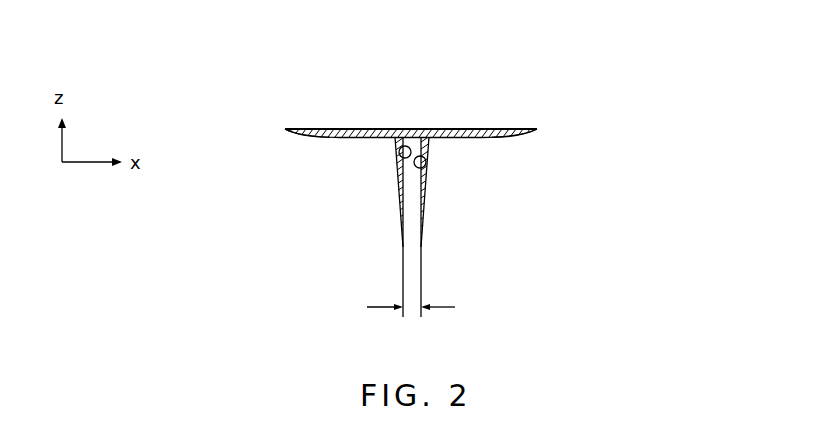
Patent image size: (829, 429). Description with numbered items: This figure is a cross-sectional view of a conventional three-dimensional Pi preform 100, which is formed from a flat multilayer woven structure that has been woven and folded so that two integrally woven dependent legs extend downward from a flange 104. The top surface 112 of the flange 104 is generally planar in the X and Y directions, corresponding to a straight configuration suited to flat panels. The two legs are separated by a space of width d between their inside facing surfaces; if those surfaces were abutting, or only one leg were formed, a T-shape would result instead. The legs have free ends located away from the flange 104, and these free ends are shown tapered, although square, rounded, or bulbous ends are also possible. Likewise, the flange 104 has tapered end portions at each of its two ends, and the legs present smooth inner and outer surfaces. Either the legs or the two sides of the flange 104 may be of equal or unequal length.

The 3D Pi preform 100 is at (415, 163).
The flange 104 is at (415, 83).
The top surface 112 is at (375, 128).